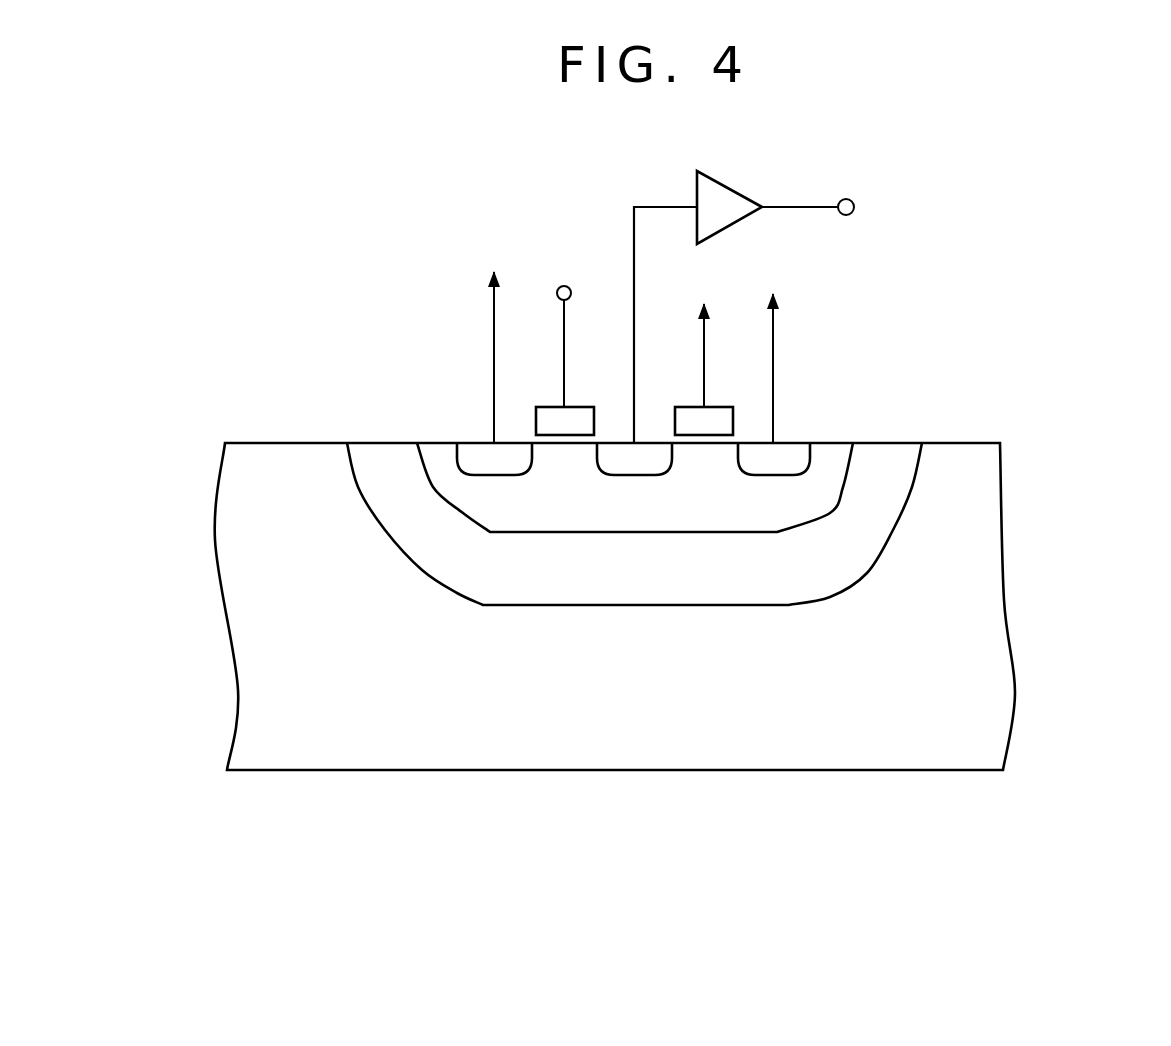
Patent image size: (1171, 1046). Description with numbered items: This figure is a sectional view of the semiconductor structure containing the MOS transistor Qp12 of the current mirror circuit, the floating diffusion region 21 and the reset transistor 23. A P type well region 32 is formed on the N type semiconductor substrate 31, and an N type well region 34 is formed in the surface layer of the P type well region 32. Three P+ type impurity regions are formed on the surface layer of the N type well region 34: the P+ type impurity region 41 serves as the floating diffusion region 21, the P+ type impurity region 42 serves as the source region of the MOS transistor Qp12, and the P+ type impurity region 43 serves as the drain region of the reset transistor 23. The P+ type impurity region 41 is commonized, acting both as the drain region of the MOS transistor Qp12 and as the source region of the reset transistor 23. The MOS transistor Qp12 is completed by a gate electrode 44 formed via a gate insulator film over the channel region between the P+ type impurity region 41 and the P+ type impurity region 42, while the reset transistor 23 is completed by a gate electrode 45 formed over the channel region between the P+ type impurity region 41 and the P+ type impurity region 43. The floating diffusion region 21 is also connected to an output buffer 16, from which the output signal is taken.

The output buffer 16 is at (741, 211).
The floating diffusion region 21 is at (619, 418).
The reset transistor 23 is at (476, 396).
The N type semiconductor substrate 31 is at (987, 716).
The P type well region 32 is at (855, 548).
The N type well region 34 is at (818, 481).
The P+ type impurity region 41 is at (643, 443).
The P+ type impurity region 42 is at (783, 443).
The P+ type impurity region 43 is at (500, 443).
The gate electrode 44 is at (722, 416).
The gate electrode 45 is at (585, 416).
The MOS transistor Qp12 is at (900, 378).